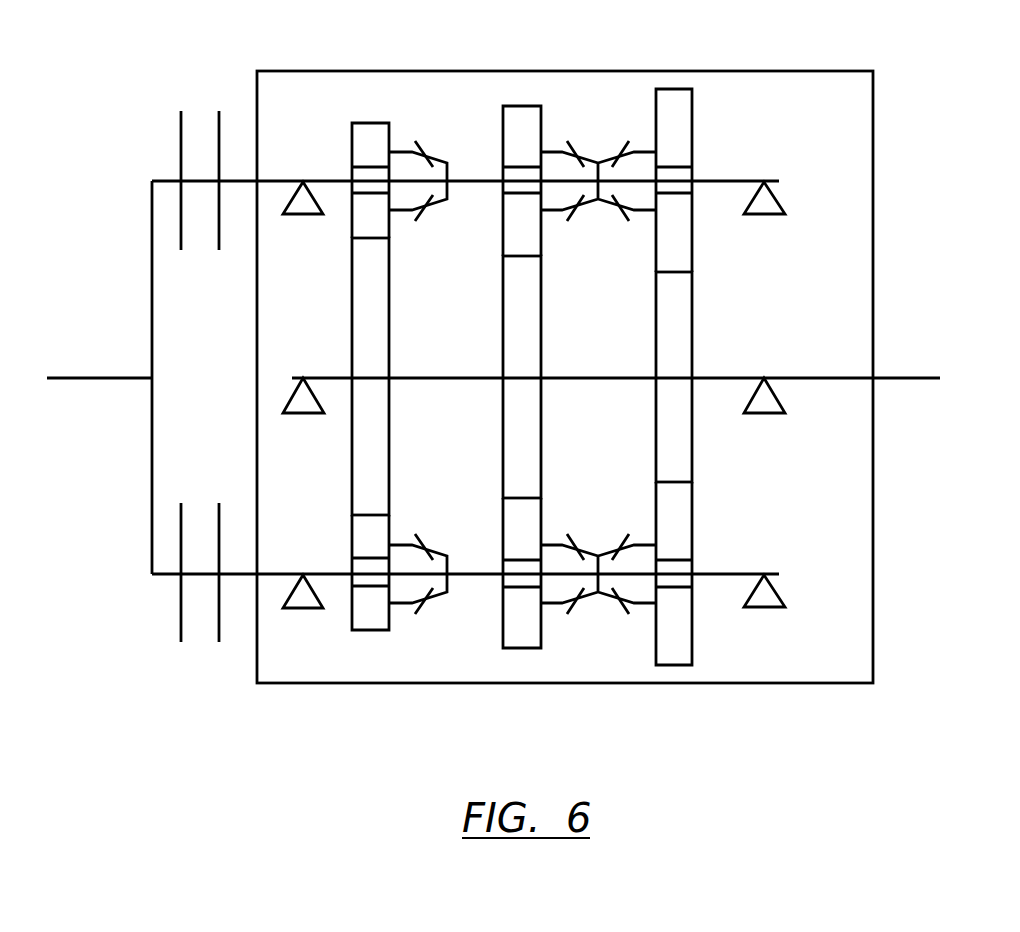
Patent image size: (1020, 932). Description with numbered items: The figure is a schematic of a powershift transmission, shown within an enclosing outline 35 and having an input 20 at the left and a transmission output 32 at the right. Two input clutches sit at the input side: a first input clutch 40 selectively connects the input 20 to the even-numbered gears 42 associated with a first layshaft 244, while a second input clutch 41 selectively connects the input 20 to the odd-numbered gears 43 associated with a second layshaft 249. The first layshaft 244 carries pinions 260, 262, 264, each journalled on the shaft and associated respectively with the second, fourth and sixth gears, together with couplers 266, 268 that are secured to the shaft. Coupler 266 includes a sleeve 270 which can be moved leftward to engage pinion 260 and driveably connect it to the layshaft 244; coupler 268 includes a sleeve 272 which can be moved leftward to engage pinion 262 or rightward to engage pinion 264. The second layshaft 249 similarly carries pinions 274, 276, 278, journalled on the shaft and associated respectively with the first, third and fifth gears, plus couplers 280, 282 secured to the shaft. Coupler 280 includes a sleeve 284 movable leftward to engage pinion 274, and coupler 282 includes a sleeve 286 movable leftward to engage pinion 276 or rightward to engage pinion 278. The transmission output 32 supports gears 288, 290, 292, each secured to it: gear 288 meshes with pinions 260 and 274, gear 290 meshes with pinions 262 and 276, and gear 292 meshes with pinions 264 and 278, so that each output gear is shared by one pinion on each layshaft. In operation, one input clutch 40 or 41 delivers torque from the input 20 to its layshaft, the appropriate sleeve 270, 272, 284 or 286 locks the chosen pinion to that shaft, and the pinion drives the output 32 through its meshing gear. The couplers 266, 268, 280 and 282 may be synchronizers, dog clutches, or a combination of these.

The input 20 is at (122, 378).
The transmission output 32 is at (915, 378).
The transmission housing 35 is at (553, 71).
The first input clutch 40 is at (181, 605).
The second input clutch 41 is at (180, 152).
The even-numbered gears 42 is at (401, 655).
The odd-numbered gears 43 is at (418, 100).
The first layshaft 244 is at (243, 574).
The second layshaft 249 is at (242, 178).
The pinion 260 is at (352, 541).
The pinion 262 is at (503, 548).
The pinion 264 is at (692, 523).
The coupler 266 is at (450, 588).
The coupler 268 is at (598, 578).
The sleeve 270 is at (447, 552).
The sleeve 272 is at (578, 542).
The pinion 274 is at (370, 122).
The pinion 276 is at (525, 106).
The pinion 278 is at (673, 88).
The coupler 280 is at (450, 166).
The coupler 282 is at (598, 186).
The sleeve 284 is at (433, 212).
The sleeve 286 is at (579, 146).
The gear 288 is at (389, 426).
The gear 290 is at (541, 422).
The gear 292 is at (692, 427).